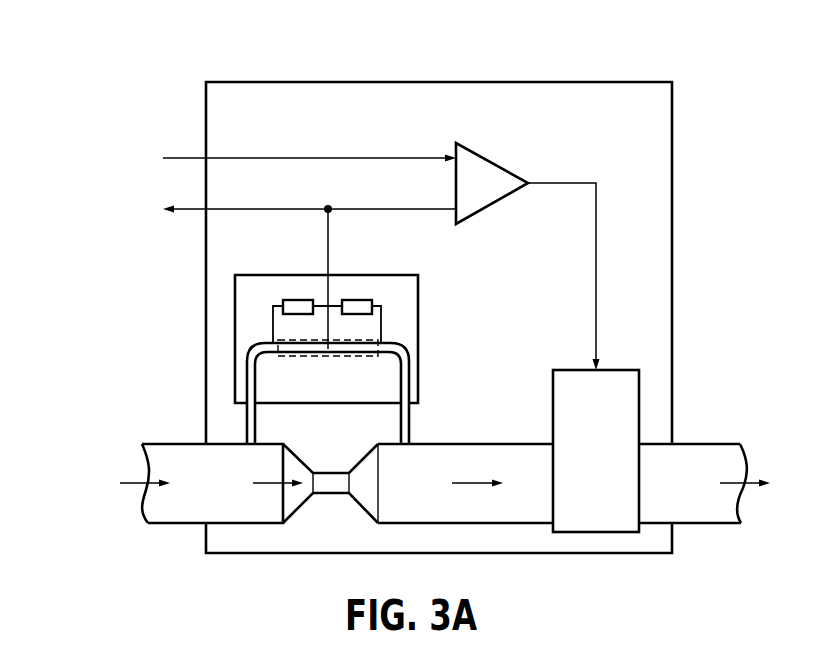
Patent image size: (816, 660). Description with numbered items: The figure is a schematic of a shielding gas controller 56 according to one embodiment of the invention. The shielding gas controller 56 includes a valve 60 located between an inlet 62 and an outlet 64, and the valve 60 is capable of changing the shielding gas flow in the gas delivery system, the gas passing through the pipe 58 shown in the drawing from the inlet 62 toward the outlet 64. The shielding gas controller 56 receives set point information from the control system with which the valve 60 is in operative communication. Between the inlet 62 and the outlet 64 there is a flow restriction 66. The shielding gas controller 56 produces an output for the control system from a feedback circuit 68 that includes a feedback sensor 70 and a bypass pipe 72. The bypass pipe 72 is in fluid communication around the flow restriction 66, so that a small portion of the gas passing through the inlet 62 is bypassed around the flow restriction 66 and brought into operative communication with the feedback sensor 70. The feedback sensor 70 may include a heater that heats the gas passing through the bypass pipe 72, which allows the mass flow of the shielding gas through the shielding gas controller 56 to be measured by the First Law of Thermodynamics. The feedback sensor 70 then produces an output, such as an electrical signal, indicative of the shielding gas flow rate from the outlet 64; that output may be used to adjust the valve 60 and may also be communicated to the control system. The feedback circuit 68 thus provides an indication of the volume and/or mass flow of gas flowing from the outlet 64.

The shielding gas controller 56 is at (670, 74).
The gas flow pipe 58 is at (163, 443).
The valve 60 is at (606, 475).
The inlet 62 is at (200, 524).
The outlet 64 is at (675, 525).
The flow restriction 66 is at (332, 494).
The feedback circuit 68 is at (427, 286).
The feedback sensor 70 is at (382, 328).
The bypass pipe 72 is at (410, 421).